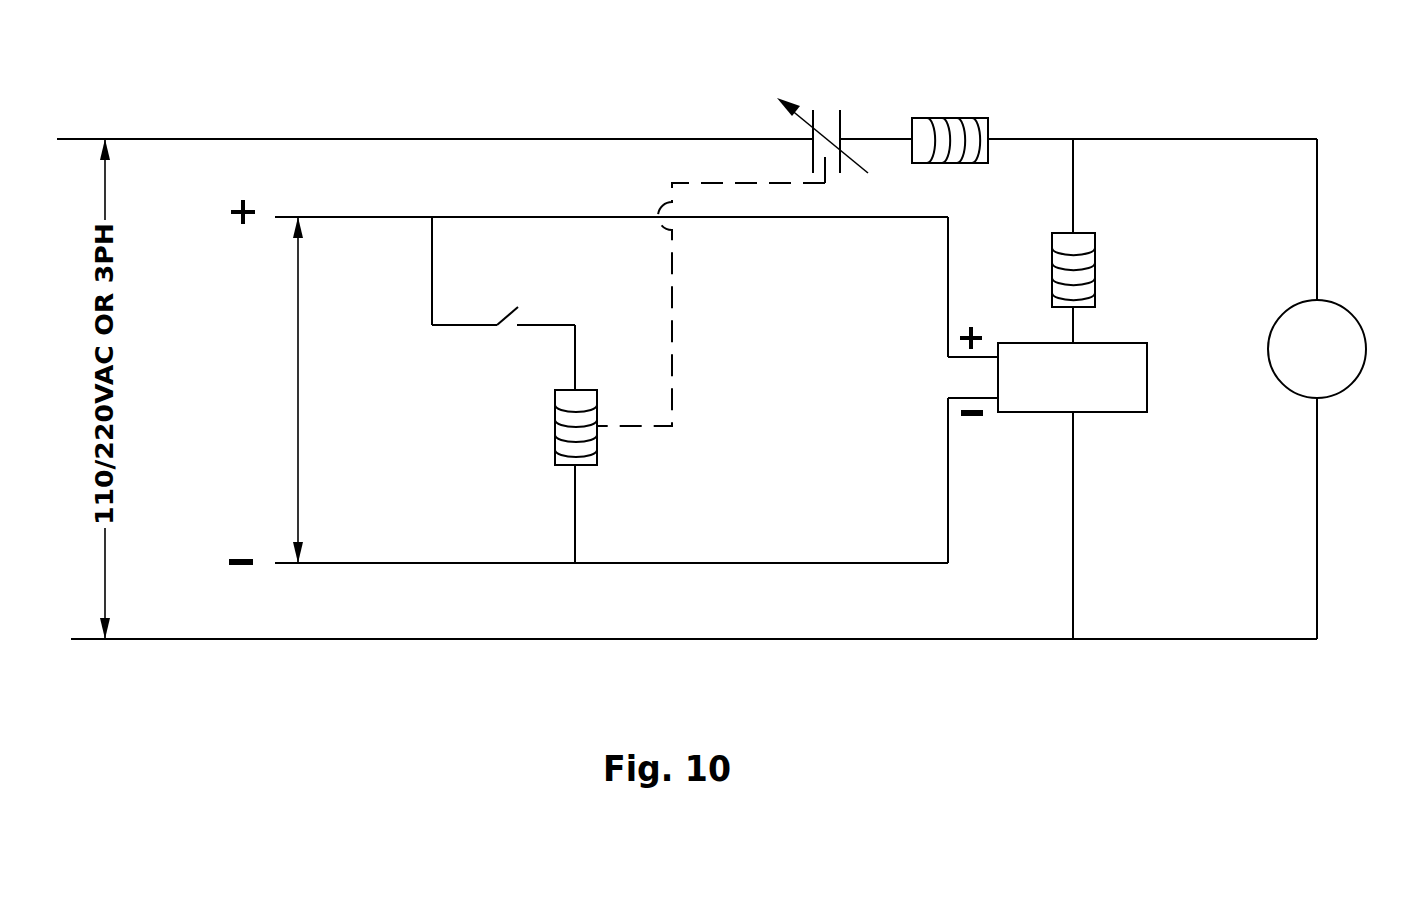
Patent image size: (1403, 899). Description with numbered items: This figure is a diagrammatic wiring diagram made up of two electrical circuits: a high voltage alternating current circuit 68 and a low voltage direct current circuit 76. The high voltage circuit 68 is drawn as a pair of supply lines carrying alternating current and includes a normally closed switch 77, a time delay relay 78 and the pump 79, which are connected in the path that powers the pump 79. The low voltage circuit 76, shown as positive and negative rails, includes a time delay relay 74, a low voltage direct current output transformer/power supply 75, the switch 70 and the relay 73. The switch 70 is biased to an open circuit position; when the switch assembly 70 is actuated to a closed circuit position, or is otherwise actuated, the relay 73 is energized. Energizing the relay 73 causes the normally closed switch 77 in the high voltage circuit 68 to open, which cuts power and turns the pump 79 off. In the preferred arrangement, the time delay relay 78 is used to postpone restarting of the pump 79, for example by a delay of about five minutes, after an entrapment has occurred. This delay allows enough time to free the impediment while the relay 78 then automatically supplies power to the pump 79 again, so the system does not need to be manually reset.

The high voltage alternating current circuit 68 is at (733, 120).
The switch 70 is at (503, 303).
The relay 73 is at (542, 476).
The time delay relay 74 is at (1104, 241).
The low voltage direct current output transformer/power supply 75 is at (1078, 483).
The low voltage direct current circuit 76 is at (396, 588).
The normally closed switch 77 is at (822, 120).
The time delay relay 78 is at (950, 110).
The pump 79 is at (1331, 330).